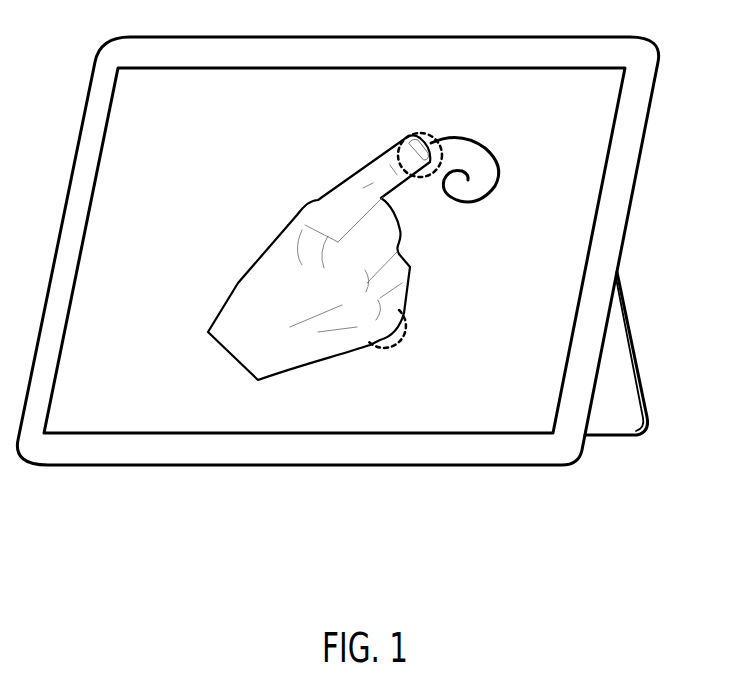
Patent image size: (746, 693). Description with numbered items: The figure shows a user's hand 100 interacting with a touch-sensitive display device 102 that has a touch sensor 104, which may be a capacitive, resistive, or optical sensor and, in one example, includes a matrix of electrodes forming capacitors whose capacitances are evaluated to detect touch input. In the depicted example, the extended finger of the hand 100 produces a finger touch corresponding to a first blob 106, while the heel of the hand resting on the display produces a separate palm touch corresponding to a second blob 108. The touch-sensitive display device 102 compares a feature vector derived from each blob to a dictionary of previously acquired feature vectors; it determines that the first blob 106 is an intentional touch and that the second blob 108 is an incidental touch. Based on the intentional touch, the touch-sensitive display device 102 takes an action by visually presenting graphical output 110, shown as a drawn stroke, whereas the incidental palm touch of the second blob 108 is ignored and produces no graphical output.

The user's hand 100 is at (366, 168).
The touch-sensitive display device 102 is at (512, 36).
The touch sensor 104 is at (611, 148).
The first blob 106 is at (426, 131).
The second blob 108 is at (396, 341).
The graphical output 110 is at (498, 158).